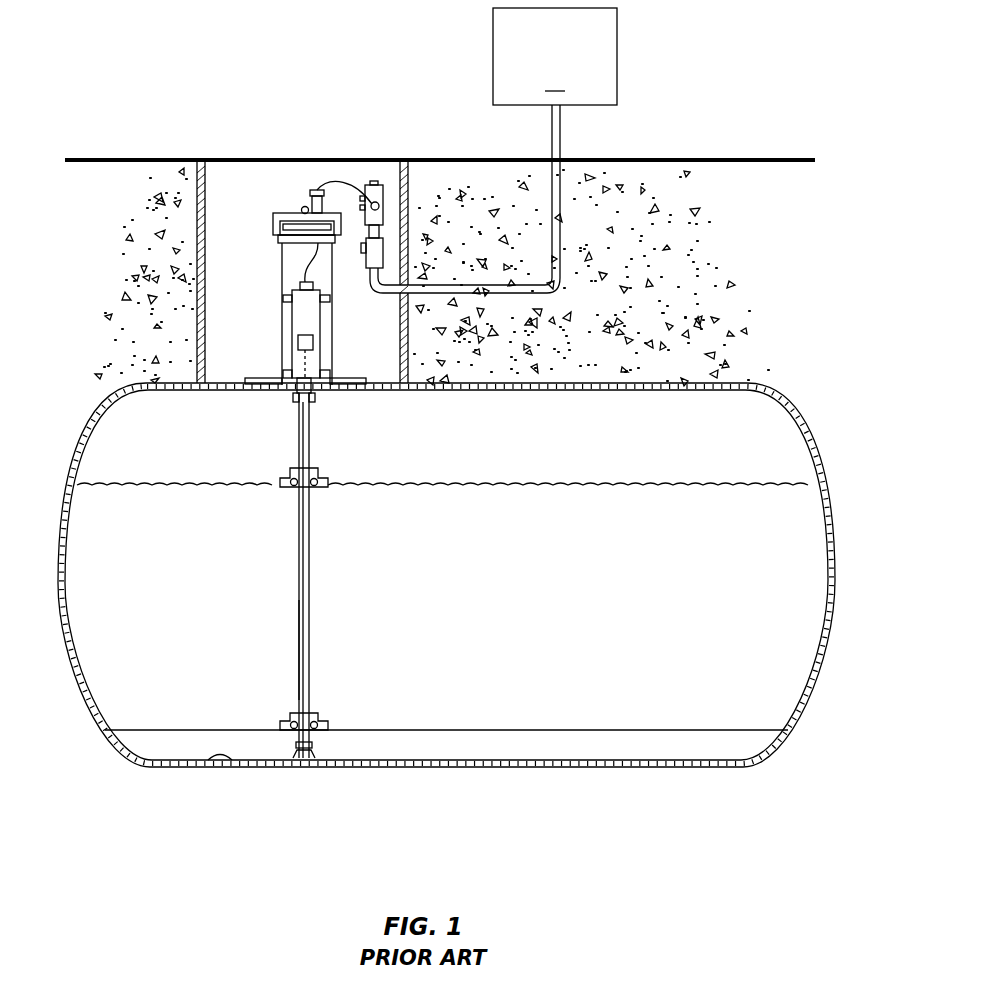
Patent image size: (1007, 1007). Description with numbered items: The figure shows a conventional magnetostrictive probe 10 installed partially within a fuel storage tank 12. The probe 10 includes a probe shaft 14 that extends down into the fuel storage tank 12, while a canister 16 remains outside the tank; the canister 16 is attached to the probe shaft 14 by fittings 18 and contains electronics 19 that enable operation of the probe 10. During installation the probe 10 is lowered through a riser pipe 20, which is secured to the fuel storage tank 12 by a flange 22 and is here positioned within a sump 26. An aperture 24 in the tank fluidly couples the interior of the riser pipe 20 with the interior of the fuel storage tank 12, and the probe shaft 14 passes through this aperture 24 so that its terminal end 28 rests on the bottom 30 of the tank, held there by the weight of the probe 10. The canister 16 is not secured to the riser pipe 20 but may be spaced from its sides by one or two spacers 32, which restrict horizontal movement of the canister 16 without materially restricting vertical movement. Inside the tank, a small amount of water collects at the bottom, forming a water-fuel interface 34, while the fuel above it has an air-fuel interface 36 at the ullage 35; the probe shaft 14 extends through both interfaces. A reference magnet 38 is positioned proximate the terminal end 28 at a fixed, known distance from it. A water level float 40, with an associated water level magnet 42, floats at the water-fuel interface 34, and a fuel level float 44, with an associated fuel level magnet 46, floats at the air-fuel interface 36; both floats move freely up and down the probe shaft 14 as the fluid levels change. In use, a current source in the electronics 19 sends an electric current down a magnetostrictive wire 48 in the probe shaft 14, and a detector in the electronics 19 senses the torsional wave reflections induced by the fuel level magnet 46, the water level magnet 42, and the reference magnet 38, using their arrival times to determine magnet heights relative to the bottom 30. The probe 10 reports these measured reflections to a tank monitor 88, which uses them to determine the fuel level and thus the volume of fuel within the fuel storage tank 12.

The probe 10 is at (171, 299).
The fuel storage tank 12 is at (617, 383).
The probe shaft 14 is at (310, 583).
The canister 16 is at (322, 338).
The fittings 18 is at (316, 395).
The electronics 19 is at (298, 338).
The riser pipe 20 is at (282, 283).
The flange 22 is at (268, 378).
The aperture 24 is at (285, 410).
The sump 26 is at (408, 258).
The terminal end 28 is at (295, 760).
The bottom 30 is at (210, 764).
The spacers 32 is at (323, 297).
The water-fuel interface 34 is at (572, 730).
The ullage 35 is at (613, 441).
The air-fuel interface 36 is at (478, 485).
The reference magnet 38 is at (312, 745).
The water level float 40 is at (324, 722).
The water level magnet 42 is at (320, 712).
The fuel level float 44 is at (328, 480).
The fuel level magnet 46 is at (318, 474).
The magnetostrictive wire 48 is at (300, 612).
The tank monitor 88 is at (493, 150).